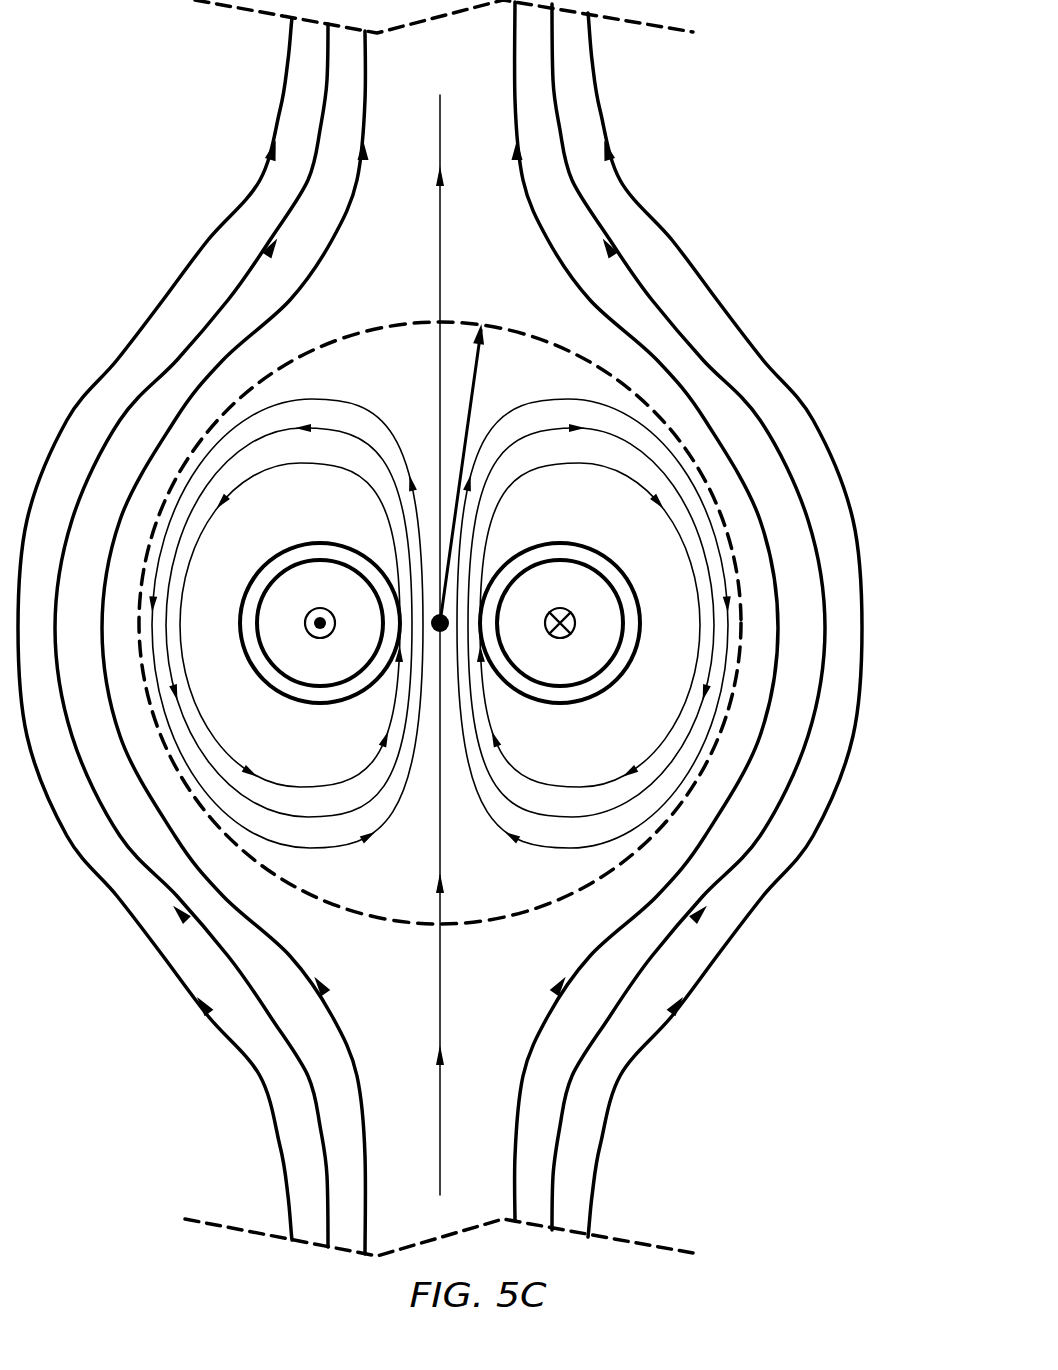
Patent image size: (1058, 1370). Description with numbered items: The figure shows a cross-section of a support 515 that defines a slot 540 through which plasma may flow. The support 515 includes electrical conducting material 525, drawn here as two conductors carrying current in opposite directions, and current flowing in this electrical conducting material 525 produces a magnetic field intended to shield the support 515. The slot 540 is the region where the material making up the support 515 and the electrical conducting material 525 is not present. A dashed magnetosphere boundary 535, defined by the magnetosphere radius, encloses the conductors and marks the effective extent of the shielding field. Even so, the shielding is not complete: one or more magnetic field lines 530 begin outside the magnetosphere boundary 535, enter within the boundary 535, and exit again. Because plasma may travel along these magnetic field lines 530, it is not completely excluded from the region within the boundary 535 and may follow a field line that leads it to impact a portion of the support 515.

The support 515 is at (282, 690).
The electrical conducting material 525 is at (305, 620).
The magnetic field lines 530 is at (545, 847).
The magnetosphere boundary 535 is at (697, 463).
The slot 540 is at (337, 847).